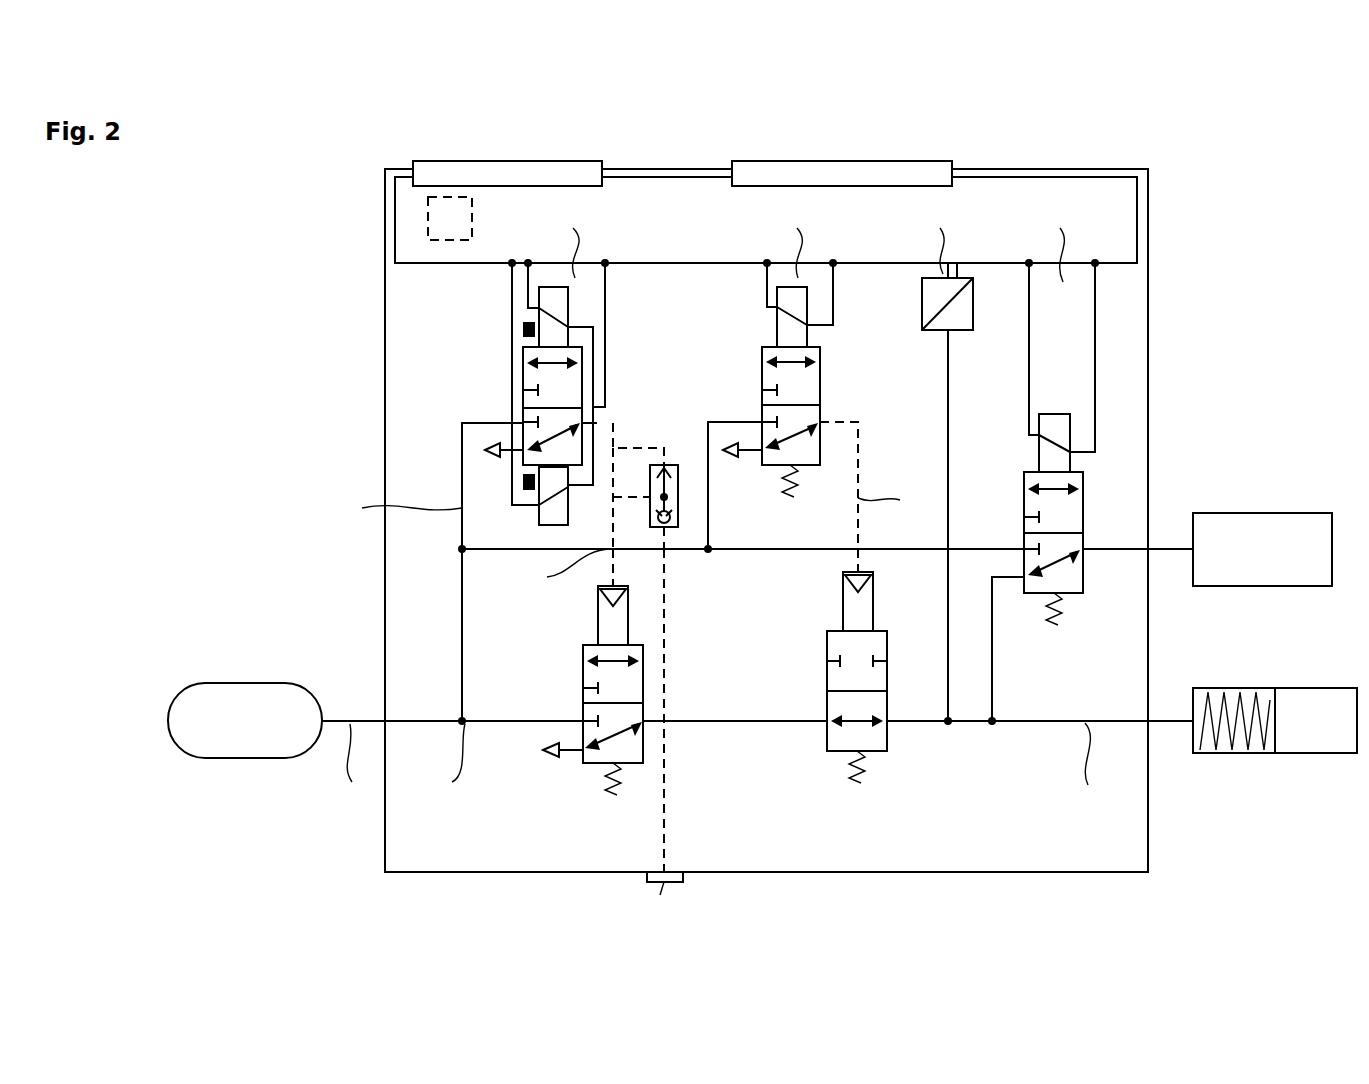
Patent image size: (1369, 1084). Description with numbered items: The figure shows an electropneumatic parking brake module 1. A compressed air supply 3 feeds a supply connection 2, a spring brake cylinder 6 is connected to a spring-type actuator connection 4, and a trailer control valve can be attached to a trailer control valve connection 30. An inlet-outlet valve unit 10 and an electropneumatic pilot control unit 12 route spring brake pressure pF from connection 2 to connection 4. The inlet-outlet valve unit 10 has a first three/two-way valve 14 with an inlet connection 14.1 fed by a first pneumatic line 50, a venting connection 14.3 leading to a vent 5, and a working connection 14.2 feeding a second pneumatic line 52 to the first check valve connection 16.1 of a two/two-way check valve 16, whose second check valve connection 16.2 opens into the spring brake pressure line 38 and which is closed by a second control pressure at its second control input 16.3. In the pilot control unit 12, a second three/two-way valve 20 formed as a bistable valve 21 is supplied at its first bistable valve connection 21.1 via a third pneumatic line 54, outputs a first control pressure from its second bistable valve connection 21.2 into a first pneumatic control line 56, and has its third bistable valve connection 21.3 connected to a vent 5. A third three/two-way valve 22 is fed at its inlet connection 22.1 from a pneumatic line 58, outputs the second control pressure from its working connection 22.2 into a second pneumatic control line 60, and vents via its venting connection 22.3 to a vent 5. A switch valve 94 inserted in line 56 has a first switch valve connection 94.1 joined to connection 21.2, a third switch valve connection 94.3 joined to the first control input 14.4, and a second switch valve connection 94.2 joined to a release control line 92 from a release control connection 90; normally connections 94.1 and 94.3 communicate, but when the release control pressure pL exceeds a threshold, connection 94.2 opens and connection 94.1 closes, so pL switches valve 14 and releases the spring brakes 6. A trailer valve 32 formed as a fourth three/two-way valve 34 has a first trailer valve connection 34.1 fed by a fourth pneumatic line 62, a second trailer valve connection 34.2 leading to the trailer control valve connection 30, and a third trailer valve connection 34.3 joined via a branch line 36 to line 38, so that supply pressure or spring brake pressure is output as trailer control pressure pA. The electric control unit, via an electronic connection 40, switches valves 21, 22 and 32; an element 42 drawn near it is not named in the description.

The electropneumatic parking brake module 1 is at (330, 193).
The supply connection 2 is at (383, 718).
The compressed air supply 3 is at (250, 758).
The spring-type actuator connection 4 is at (1149, 723).
The vent 5 is at (485, 448).
The spring brake cylinder 6 is at (1276, 755).
The inlet-outlet valve unit 10 is at (751, 808).
The electropneumatic pilot control unit 12 is at (405, 312).
The first 3/2-way valve 14 is at (571, 708).
The inlet connection of first 3/2-way valve 14.1 is at (583, 720).
The working connection of first 3/2-way valve 14.2 is at (643, 724).
The venting connection of first 3/2-way valve 14.3 is at (584, 752).
The first control input 14.4 is at (598, 611).
The 2/2-way check valve 16 is at (839, 682).
The first check valve connection 16.1 is at (827, 719).
The second check valve connection 16.2 is at (888, 723).
The second control input 16.3 is at (843, 615).
The second 3/2-way valve 20 is at (523, 328).
The bistable valve 21 is at (532, 408).
The first bistable valve connection 21.1 is at (523, 422).
The second bistable valve connection 21.2 is at (597, 422).
The third bistable valve connection 21.3 is at (527, 450).
The third 3/2-way valve 22 is at (784, 395).
The inlet connection of third 3/2-way valve 22.1 is at (762, 422).
The working connection of third 3/2-way valve 22.2 is at (818, 423).
The venting connection of third 3/2-way valve 22.3 is at (763, 452).
The trailer control valve connection 30 is at (1149, 552).
The trailer valve 32 is at (1024, 472).
The fourth 3/2-way valve 34 is at (1048, 549).
The first trailer valve connection 34.1 is at (1024, 548).
The second trailer valve connection 34.2 is at (1083, 548).
The third trailer valve connection 34.3 is at (1022, 580).
The branch line 36 is at (992, 690).
The spring brake pressure line 38 is at (1028, 723).
The electronic connection 40 is at (450, 217).
The pressure sensor 42 is at (974, 300).
The first pneumatic line 50 is at (549, 728).
The second pneumatic line 52 is at (760, 723).
The third pneumatic line 54 is at (462, 538).
The first pneumatic control line 56 is at (610, 505).
The fourth pneumatic line 58 is at (508, 549).
The second pneumatic control line 60 is at (858, 458).
The fourth pneumatic line 62 is at (827, 548).
The release control connection 90 is at (581, 911).
The release control line 92 is at (664, 850).
The switch valve 94 is at (661, 496).
The first switch valve connection 94.1 is at (663, 462).
The second switch valve connection 94.2 is at (666, 528).
The third switch valve connection 94.3 is at (650, 497).